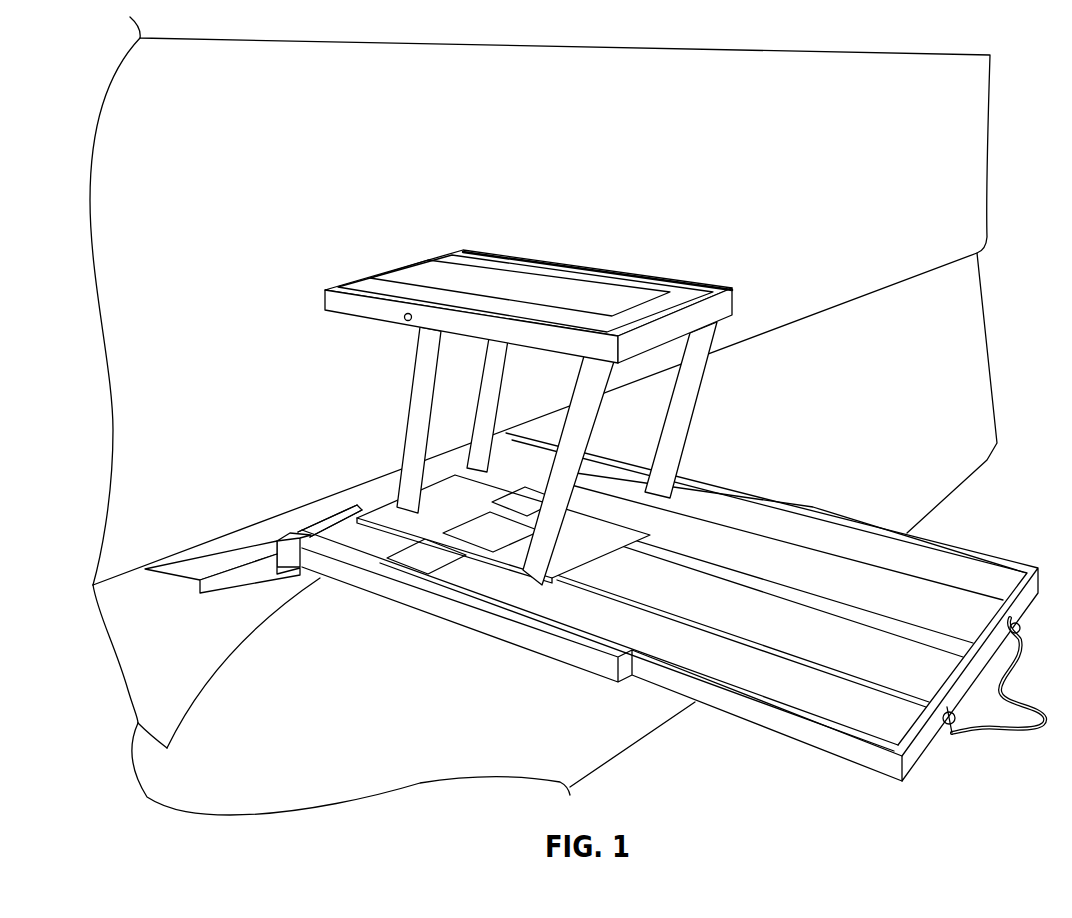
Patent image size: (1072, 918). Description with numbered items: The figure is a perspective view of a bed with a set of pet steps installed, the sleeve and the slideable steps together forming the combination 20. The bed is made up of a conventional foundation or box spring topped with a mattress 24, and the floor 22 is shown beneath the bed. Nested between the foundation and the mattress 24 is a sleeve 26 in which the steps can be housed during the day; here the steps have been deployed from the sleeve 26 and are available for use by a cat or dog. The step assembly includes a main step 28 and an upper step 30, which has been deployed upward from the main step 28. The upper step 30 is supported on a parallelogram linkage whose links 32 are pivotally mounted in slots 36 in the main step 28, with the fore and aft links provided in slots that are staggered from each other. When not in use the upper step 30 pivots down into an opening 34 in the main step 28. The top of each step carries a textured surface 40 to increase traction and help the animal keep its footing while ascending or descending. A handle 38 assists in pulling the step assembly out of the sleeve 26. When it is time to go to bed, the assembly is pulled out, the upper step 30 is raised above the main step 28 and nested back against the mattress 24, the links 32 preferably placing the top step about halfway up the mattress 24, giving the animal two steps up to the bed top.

The combination of sleeve and slideable steps 20 is at (266, 354).
The floor 22 is at (175, 684).
The mattress 24 is at (299, 204).
The sleeve 26 is at (222, 573).
The main step 28 is at (731, 706).
The upper step 30 is at (737, 300).
The links 32 is at (697, 378).
The opening 34 is at (364, 510).
The slots 36 is at (305, 517).
The handle 38 is at (986, 727).
The textured surface 40 is at (878, 718).